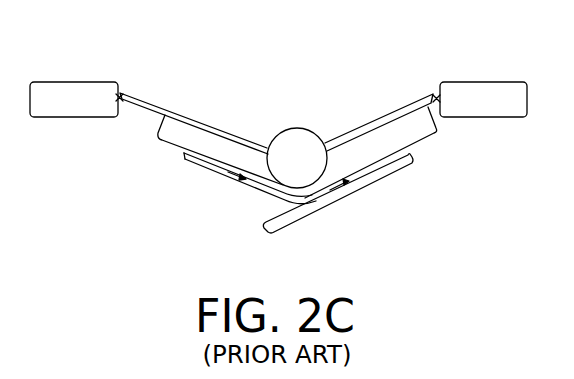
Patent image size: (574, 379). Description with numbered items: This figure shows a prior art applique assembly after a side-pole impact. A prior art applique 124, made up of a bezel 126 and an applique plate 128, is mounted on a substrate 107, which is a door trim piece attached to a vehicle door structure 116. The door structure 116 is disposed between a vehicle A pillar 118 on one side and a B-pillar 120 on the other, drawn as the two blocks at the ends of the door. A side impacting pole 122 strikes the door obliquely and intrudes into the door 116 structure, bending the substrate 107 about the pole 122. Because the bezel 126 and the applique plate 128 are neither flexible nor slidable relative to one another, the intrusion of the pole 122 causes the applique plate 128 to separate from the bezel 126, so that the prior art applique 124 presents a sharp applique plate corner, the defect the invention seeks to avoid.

The substrate 107 is at (437, 133).
The vehicle door structure 116 is at (178, 110).
The vehicle A pillar 118 is at (482, 80).
The B-pillar 120 is at (73, 81).
The pole 122 is at (298, 140).
The prior art applique 124 is at (253, 210).
The bezel 126 is at (202, 168).
The applique plate 128 is at (373, 180).